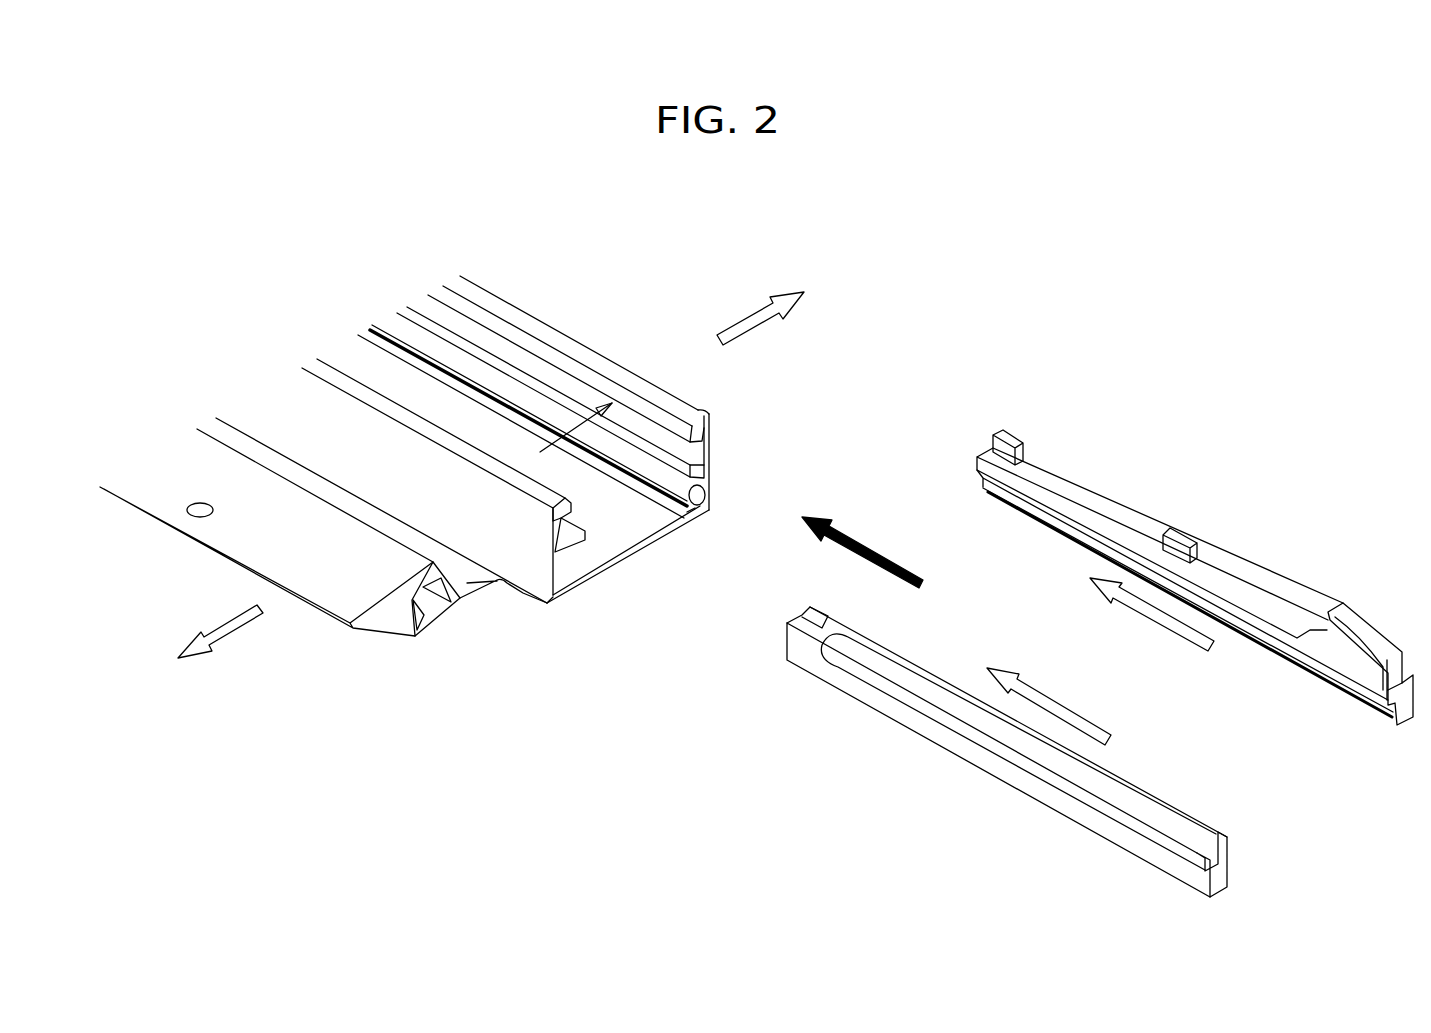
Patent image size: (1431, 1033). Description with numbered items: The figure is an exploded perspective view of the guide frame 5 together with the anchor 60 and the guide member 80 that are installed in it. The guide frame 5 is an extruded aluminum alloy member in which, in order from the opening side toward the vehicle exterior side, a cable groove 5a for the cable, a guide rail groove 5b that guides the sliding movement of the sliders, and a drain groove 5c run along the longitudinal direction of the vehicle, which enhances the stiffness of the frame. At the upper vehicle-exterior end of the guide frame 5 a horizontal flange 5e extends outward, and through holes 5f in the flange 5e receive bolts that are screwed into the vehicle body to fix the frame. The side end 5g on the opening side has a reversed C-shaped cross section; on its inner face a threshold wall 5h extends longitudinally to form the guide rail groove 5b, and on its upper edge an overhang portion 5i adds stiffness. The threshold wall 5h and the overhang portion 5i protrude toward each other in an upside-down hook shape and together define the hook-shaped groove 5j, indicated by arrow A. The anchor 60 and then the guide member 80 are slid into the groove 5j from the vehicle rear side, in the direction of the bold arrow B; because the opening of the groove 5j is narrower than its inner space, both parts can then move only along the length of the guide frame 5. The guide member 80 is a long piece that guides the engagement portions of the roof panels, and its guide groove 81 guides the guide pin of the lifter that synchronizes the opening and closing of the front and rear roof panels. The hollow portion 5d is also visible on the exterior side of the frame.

The guide frame 5 is at (588, 338).
The cable groove 5a is at (702, 497).
The guide rail groove 5b is at (610, 528).
The drain groove 5c is at (470, 581).
The hollow portion 5d is at (433, 607).
The horizontal flange 5e is at (257, 541).
The through hole 5f is at (190, 507).
The side end 5g is at (722, 445).
The threshold wall 5h is at (687, 512).
The overhang portion 5i is at (698, 408).
The hook-shaped groove 5j is at (546, 368).
The anchor 60 is at (1204, 519).
The guide member 80 is at (777, 667).
The guide groove 81 is at (962, 747).